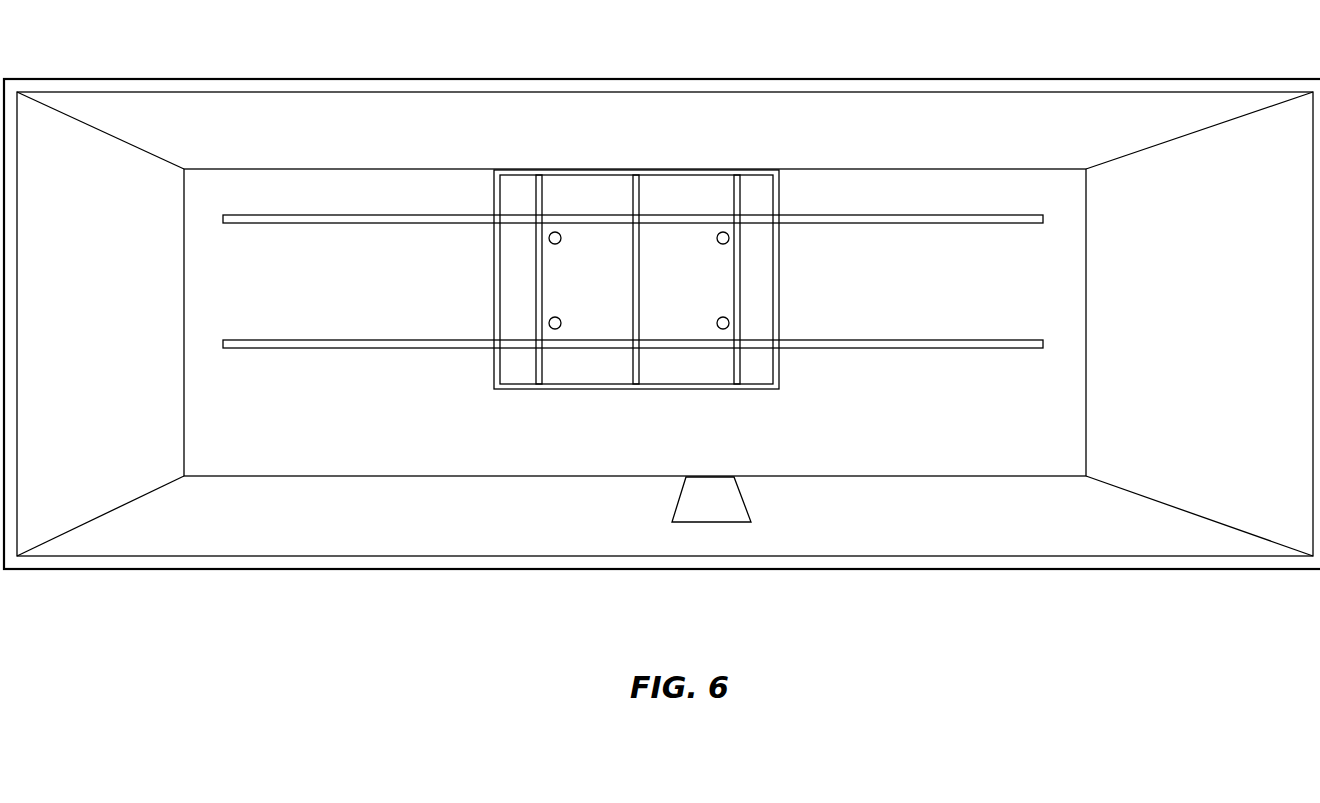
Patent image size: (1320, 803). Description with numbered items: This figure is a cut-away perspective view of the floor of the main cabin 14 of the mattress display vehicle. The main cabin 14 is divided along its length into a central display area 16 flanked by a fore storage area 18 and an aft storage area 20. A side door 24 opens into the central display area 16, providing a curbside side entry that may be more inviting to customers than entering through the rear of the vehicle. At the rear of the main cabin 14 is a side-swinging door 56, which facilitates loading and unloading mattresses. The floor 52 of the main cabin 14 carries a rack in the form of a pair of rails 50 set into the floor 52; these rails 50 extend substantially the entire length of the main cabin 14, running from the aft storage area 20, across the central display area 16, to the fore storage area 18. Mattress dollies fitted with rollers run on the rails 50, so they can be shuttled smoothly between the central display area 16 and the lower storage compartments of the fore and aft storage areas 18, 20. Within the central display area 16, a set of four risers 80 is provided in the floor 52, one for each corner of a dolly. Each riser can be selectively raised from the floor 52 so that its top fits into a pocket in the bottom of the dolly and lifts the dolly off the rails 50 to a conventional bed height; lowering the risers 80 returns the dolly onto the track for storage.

The main cabin 14 is at (1092, 110).
The central display area 16 is at (607, 110).
The fore storage area 18 is at (947, 110).
The aft storage area 20 is at (311, 110).
The side door 24 is at (733, 501).
The rails 50 is at (890, 220).
The floor 52 is at (642, 455).
The side-swinging door 56 is at (92, 497).
The risers 80 is at (718, 242).